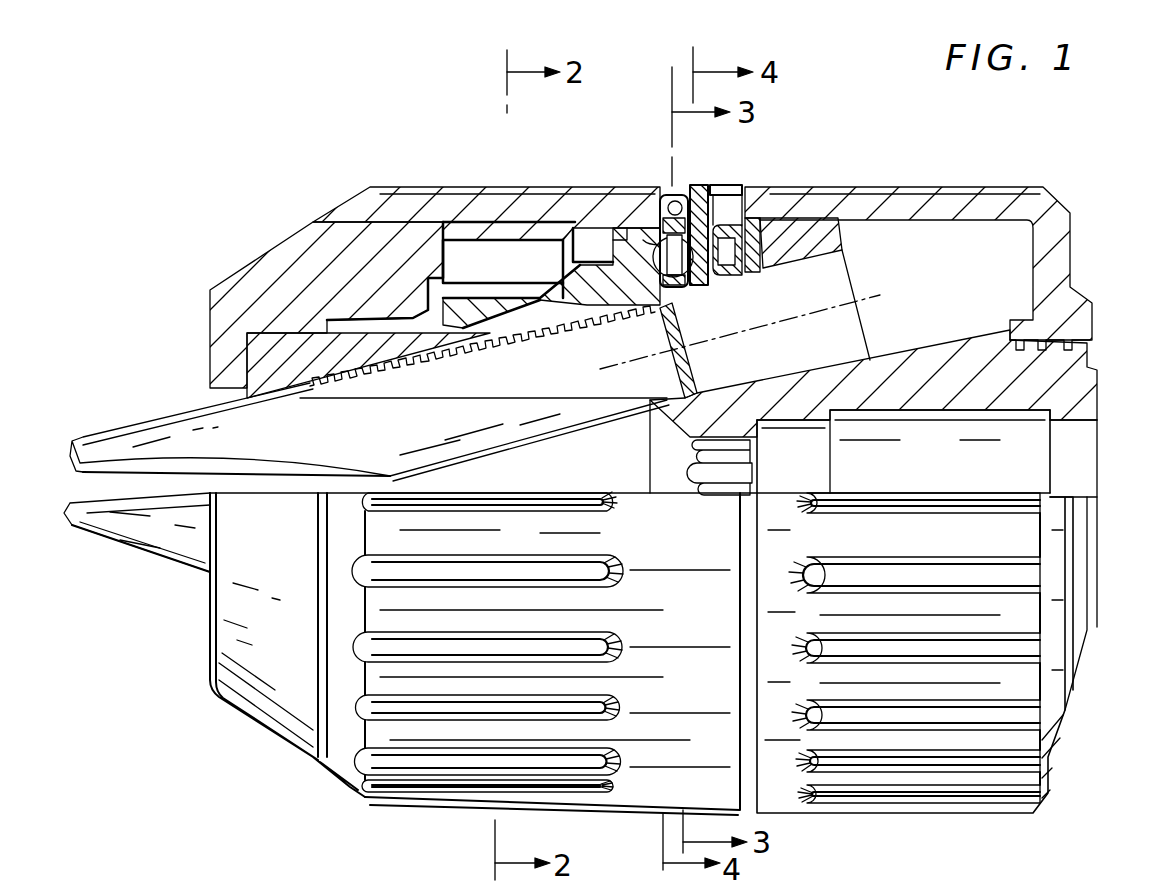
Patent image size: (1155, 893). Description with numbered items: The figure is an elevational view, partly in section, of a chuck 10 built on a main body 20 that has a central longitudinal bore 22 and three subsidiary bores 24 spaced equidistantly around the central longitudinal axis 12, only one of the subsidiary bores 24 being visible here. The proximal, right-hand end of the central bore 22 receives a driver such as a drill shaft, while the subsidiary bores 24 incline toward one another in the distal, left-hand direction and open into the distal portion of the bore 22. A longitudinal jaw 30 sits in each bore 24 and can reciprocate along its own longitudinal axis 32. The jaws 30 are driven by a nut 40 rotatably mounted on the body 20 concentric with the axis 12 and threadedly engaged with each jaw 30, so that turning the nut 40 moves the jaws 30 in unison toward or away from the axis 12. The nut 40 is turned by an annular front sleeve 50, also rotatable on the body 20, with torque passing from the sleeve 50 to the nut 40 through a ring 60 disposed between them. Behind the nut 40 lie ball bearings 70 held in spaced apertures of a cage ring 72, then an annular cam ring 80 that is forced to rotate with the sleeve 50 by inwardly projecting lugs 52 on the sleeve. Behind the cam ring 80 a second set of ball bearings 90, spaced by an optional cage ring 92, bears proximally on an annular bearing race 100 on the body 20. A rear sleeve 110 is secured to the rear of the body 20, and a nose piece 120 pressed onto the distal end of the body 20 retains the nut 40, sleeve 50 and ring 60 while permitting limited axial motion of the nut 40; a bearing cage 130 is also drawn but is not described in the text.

The chuck 10 is at (984, 140).
The central longitudinal axis 12 is at (1130, 498).
The main body 20 is at (1078, 392).
The central longitudinal bore 22 is at (1080, 468).
The subsidiary bores 24 is at (830, 262).
The longitudinal jaw 30 is at (690, 352).
The longitudinal axis 32 is at (868, 298).
The nut 40 is at (548, 230).
The annular front sleeve 50 is at (368, 205).
The lugs 52 is at (700, 195).
The ring 60 is at (455, 225).
The ball bearings 70 is at (625, 235).
The cage ring 72 is at (648, 240).
The annular cam ring 80 is at (722, 225).
The ball bearings 90 is at (757, 218).
The cage ring 92 is at (732, 196).
The annular bearing race 100 is at (790, 200).
The rear sleeve 110 is at (968, 198).
The nose piece 120 is at (278, 262).
The bearing cage 130 is at (668, 196).